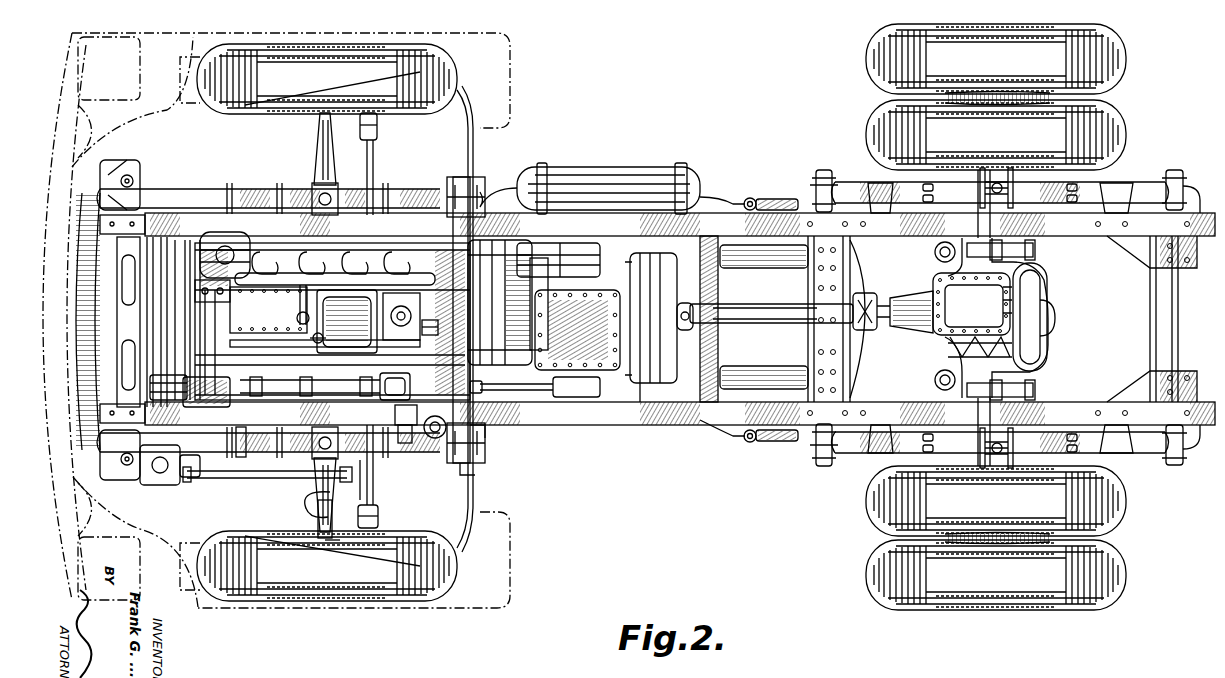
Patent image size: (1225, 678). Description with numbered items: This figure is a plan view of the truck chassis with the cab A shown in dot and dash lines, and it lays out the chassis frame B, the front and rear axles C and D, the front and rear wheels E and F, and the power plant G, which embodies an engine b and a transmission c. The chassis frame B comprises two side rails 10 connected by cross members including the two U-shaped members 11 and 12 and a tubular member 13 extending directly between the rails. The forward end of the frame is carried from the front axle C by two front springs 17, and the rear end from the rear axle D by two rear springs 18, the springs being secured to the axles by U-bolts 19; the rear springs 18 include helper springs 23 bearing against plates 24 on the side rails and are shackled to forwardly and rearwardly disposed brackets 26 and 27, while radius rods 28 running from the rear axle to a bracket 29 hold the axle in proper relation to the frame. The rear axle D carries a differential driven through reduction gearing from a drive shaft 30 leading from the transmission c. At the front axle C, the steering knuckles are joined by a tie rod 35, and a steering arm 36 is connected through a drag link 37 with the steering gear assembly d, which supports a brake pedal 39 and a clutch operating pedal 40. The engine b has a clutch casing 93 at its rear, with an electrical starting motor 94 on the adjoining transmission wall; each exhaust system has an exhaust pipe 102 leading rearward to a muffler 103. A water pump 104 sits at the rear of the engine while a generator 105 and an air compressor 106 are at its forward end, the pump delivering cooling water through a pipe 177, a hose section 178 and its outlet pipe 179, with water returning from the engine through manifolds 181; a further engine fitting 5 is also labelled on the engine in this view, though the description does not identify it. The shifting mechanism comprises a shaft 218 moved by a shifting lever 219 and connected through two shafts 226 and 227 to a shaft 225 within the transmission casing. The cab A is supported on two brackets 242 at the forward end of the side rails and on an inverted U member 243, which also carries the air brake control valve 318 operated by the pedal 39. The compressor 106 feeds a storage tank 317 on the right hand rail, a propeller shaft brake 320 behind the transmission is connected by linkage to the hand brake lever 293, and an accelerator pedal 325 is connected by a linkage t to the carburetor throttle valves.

The side rails 10 is at (545, 422).
The U-shaped cross member 11 is at (838, 350).
The U-shaped cross member 12 is at (1160, 312).
The tubular cross member 13 is at (718, 348).
The front springs 17 is at (406, 444).
The rear springs 18 is at (1170, 185).
The U-bolts 19 is at (316, 186).
The helper springs 23 is at (910, 212).
The plates 24 is at (880, 183).
The forward rear-spring bracket 26 is at (815, 190).
The rearward rear-spring bracket 27 is at (1195, 213).
The radius rods 28 is at (780, 199).
The radius rod bracket 29 is at (748, 198).
The drive shaft 30 is at (755, 310).
The tie rod 35 is at (374, 492).
The steering arm 36 is at (305, 497).
The drag link 37 is at (262, 481).
The brake pedal 39 is at (196, 394).
The clutch operating pedal 40 is at (192, 478).
The clutch casing 93 is at (490, 318).
The electrical starting motor 94 is at (568, 248).
The exhaust pipe 102 is at (575, 398).
The muffler 103 is at (760, 268).
The water pump 104 is at (402, 425).
The electrical generator 105 is at (244, 442).
The air compressor 106 is at (225, 230).
The pipe 177 is at (412, 318).
The hose section 178 is at (422, 332).
The pump outlet pipe 179 is at (355, 381).
The water manifolds 181 is at (392, 220).
The shaft 218 is at (270, 337).
The shifting lever 219 is at (245, 298).
The shaft 225 is at (520, 393).
The connecting shaft 226 is at (345, 345).
The connecting shaft 227 is at (482, 430).
The cab brackets 242 is at (128, 178).
The inverted U member 243 is at (478, 445).
The brake lever 293 is at (232, 316).
The storage tank 317 is at (612, 152).
The control valve 318 is at (438, 440).
The propeller shaft brake 320 is at (650, 378).
The accelerator pedal 325 is at (150, 386).
The exhaust port 5 is at (405, 268).
The cab A is at (470, 478).
The chassis frame B is at (655, 418).
The front axle C is at (318, 523).
The rear axle D is at (1048, 330).
The front wheels E is at (395, 142).
The rear wheels F is at (866, 70).
The power plant G is at (525, 290).
The engine b is at (320, 333).
The transmission c is at (590, 320).
The steering gear assembly d is at (140, 470).
The throttle linkage t is at (300, 317).